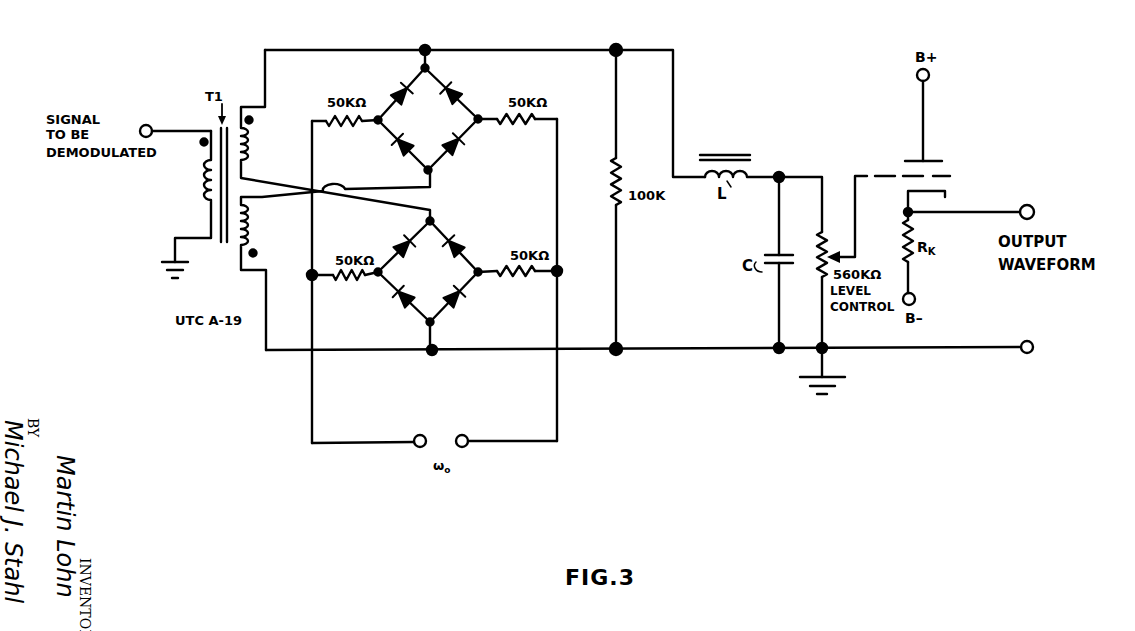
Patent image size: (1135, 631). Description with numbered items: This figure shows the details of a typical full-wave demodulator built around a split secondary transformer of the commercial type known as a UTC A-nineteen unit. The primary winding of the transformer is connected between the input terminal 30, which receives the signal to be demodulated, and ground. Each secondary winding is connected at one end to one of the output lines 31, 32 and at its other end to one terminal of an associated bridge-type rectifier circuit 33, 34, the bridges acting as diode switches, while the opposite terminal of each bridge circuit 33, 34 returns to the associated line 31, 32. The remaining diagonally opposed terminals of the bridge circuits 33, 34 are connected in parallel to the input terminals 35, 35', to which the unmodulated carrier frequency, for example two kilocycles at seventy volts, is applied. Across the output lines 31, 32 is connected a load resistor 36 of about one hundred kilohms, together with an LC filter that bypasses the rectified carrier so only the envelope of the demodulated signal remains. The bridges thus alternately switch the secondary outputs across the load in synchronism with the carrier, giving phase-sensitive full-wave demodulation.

The input terminal 30 is at (146, 125).
The output line 31 is at (325, 50).
The output line 32 is at (290, 352).
The bridge-type rectifier circuit 33 is at (428, 87).
The bridge-type rectifier circuit 34 is at (425, 300).
The input terminal 35 is at (369, 453).
The input terminal 35' is at (506, 454).
The load resistor 36 is at (624, 203).